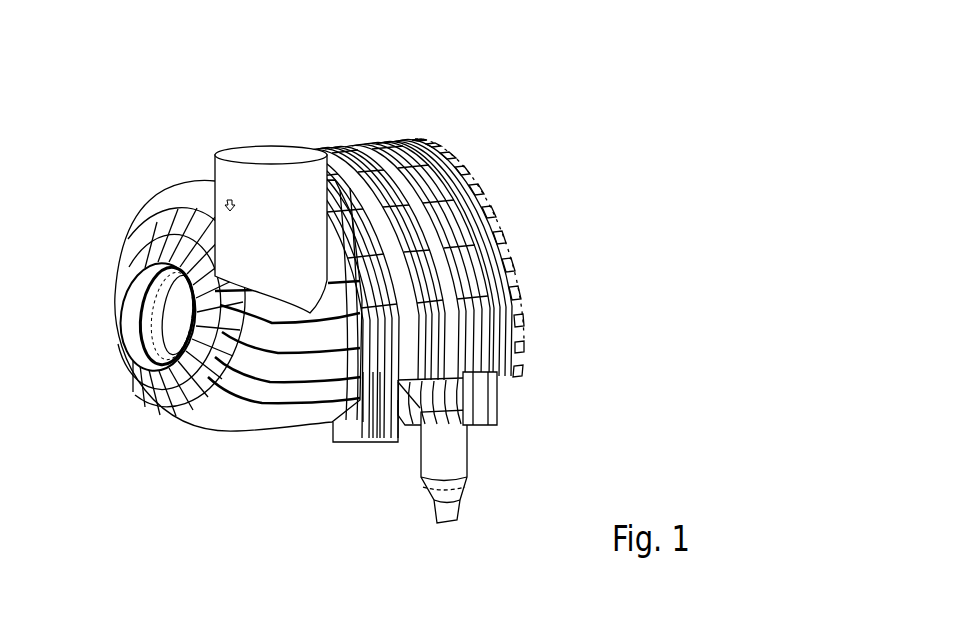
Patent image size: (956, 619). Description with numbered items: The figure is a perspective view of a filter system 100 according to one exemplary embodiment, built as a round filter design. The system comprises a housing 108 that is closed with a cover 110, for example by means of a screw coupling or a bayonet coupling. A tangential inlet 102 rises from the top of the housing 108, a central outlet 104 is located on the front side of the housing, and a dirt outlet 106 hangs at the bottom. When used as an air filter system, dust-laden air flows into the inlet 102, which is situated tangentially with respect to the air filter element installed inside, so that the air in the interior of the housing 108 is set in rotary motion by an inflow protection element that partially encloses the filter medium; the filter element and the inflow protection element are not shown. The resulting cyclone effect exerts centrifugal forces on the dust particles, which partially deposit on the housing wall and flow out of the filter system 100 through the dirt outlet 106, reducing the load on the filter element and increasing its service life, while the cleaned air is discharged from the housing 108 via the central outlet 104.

The filter system 100 is at (578, 128).
The tangential inlet 102 is at (271, 150).
The central outlet 104 is at (135, 322).
The dirt outlet 106 is at (461, 458).
The housing 108 is at (384, 147).
The cover 110 is at (515, 262).